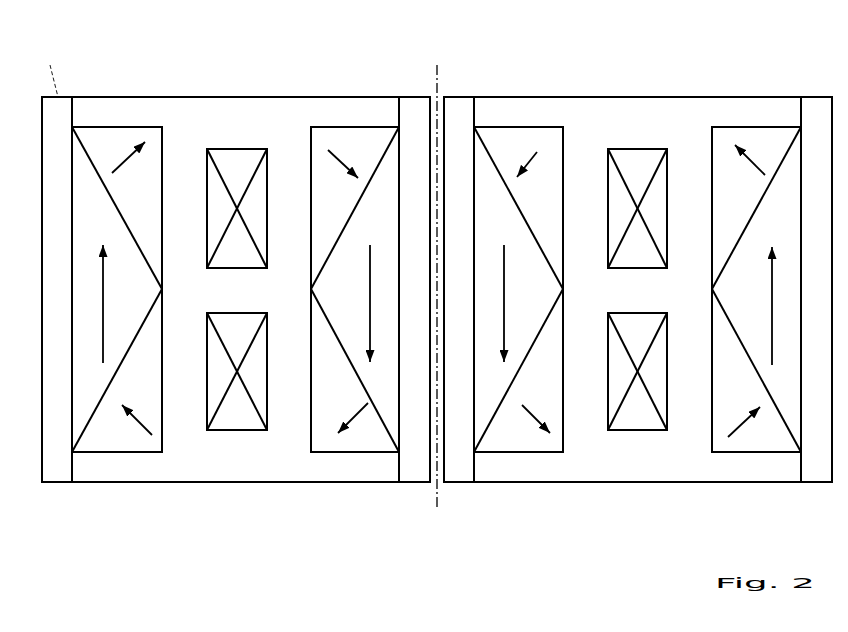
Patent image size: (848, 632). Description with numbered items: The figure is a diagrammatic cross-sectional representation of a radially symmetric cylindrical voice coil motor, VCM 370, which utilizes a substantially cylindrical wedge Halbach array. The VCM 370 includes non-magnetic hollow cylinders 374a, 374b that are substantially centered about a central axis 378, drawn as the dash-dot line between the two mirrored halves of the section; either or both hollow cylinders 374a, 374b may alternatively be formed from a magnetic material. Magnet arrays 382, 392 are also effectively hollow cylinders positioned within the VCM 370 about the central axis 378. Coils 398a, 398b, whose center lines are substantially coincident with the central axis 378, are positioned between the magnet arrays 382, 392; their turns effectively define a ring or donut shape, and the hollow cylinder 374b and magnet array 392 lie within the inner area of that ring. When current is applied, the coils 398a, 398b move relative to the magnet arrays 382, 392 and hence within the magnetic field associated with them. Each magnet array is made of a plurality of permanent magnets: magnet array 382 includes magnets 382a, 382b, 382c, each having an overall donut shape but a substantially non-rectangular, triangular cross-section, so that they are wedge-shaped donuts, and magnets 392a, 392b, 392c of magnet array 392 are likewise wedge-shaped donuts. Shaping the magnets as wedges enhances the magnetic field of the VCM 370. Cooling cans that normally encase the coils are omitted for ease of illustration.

The VCM 370 is at (437, 242).
The non-magnetic hollow cylinder 374a is at (117, 126).
The non-magnetic hollow cylinder 374b is at (467, 260).
The central axis 378 is at (471, 293).
The magnet array 382 is at (412, 324).
The magnet 382a is at (436, 179).
The magnet 382b is at (437, 305).
The magnet 382c is at (436, 405).
The magnet array 392 is at (370, 107).
The magnet 392a is at (437, 179).
The magnet 392b is at (436, 303).
The magnet 392c is at (453, 405).
The coil 398a is at (456, 155).
The coil 398b is at (451, 417).